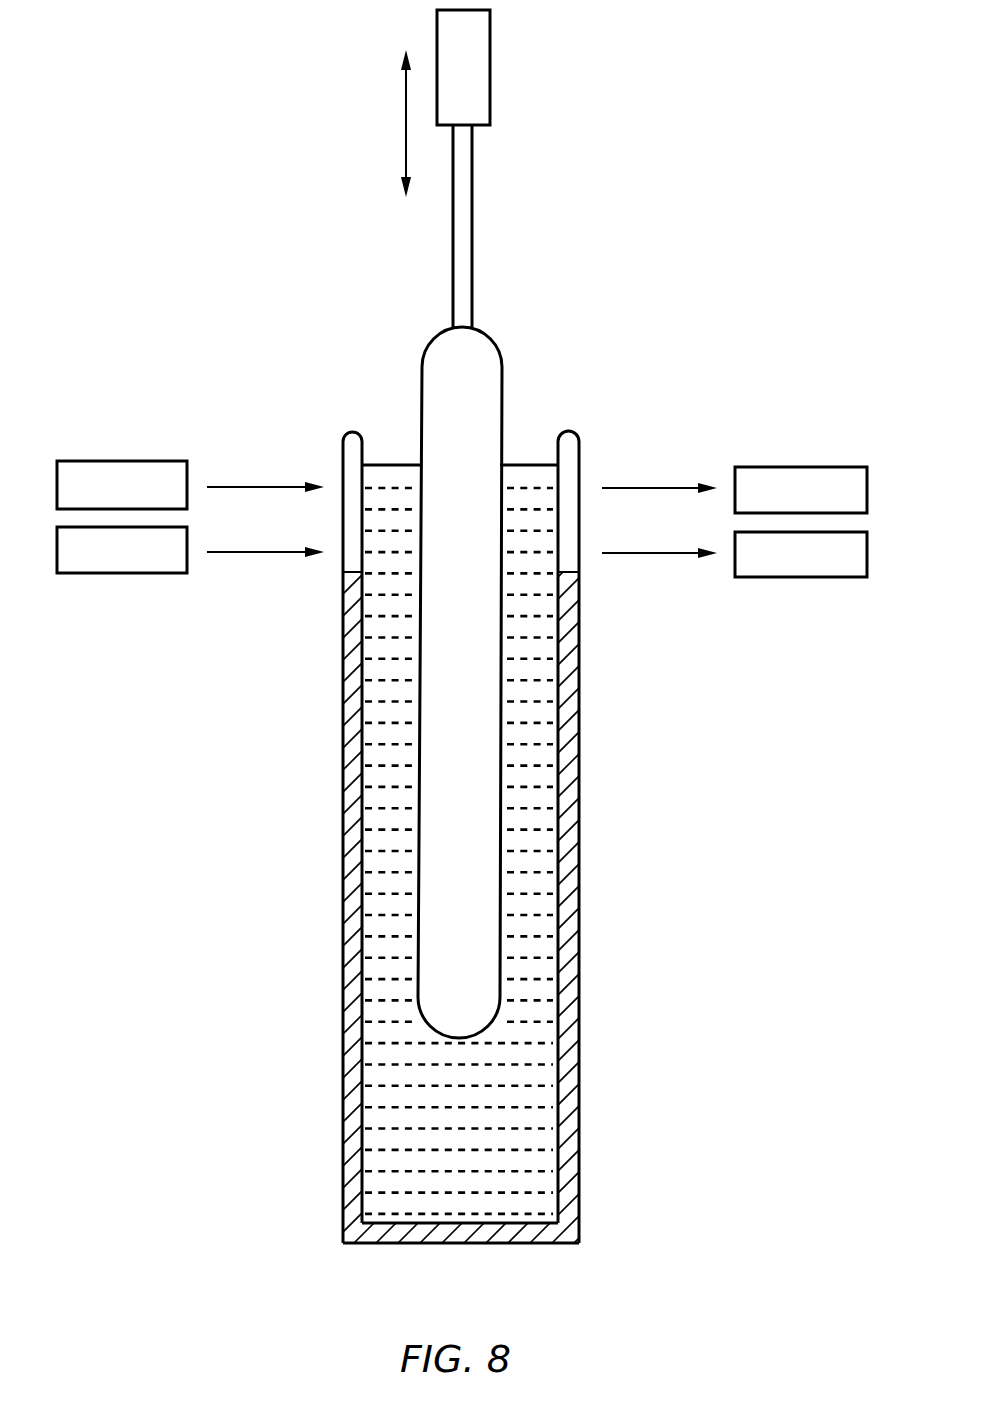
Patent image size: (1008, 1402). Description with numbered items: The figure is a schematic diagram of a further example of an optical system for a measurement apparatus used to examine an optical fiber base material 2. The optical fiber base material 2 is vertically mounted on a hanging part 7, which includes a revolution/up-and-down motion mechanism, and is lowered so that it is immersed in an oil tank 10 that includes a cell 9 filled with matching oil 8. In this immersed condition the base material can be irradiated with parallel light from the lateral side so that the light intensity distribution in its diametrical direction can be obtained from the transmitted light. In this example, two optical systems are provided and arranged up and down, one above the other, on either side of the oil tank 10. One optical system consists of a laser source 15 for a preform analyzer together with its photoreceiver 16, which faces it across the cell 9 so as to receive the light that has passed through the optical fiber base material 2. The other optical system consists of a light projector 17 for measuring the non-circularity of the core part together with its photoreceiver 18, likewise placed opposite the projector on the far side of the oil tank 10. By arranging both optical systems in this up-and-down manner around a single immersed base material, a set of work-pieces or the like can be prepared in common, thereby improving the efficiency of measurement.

The hanging part 7 is at (483, 68).
The optical fiber base material 2 is at (495, 382).
The cell 9 is at (353, 437).
The oil tank 10 is at (570, 882).
The matching oil 8 is at (480, 1135).
The laser source for preform analyzer 15 is at (122, 470).
The light projector for measuring non-circularity of core part 17 is at (122, 563).
The photoreceiver 16 is at (800, 475).
The photoreceiver 18 is at (800, 570).